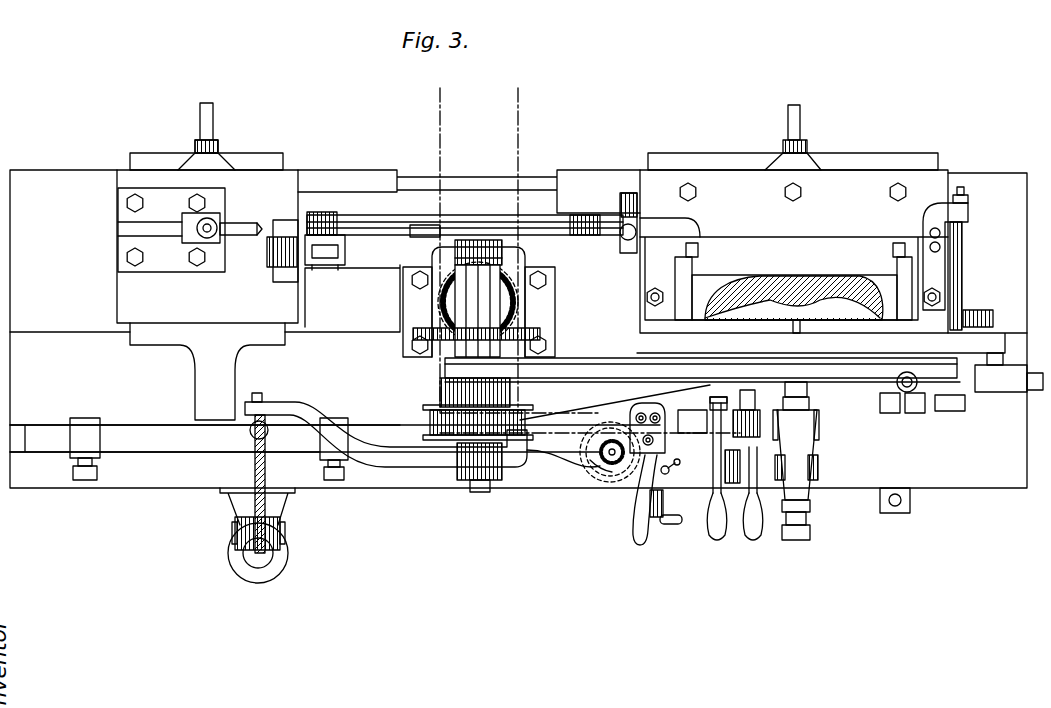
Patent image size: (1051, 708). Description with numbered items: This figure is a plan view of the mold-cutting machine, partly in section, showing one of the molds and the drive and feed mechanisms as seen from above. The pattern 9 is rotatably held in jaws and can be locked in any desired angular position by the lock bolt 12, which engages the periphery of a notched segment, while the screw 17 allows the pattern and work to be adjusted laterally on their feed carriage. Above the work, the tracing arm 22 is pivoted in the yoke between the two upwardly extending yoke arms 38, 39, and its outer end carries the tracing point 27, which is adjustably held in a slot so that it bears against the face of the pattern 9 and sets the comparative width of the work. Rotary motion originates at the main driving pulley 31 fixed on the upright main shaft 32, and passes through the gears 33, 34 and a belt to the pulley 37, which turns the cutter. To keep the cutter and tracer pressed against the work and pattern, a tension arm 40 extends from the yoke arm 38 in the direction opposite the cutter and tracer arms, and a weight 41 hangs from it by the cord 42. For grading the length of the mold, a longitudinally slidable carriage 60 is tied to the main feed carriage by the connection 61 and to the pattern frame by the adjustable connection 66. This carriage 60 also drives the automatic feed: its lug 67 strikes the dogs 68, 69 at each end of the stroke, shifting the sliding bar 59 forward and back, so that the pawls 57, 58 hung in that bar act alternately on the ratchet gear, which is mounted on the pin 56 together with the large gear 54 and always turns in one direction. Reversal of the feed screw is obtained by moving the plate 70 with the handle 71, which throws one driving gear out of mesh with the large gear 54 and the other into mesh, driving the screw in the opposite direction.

The pattern 9 is at (752, 276).
The lock bolt 12 is at (970, 207).
The screw 17 is at (802, 133).
The tracing arm 22 is at (602, 357).
The tracing point 27 is at (825, 277).
The main driving pulley 31 is at (592, 411).
The main shaft 32 is at (435, 418).
The gear 33 is at (523, 304).
The gear 34 is at (417, 332).
The pulley 37 is at (818, 436).
The yoke arm 38 is at (470, 463).
The yoke arm 39 is at (490, 237).
The tension arm 40 is at (388, 478).
The weight 41 is at (275, 568).
The cord 42 is at (285, 500).
The large gear 54 is at (620, 478).
The pin 56 is at (587, 458).
The pawl 57 is at (616, 470).
The pawl 58 is at (613, 422).
The sliding bar 59 is at (145, 440).
The carriage 60 is at (130, 330).
The connection 61 is at (365, 233).
The adjustable connection 66 is at (232, 228).
The lug 67 is at (200, 378).
The dog 68 is at (80, 424).
The dog 69 is at (325, 445).
The plate 70 is at (676, 460).
The handle 71 is at (633, 537).